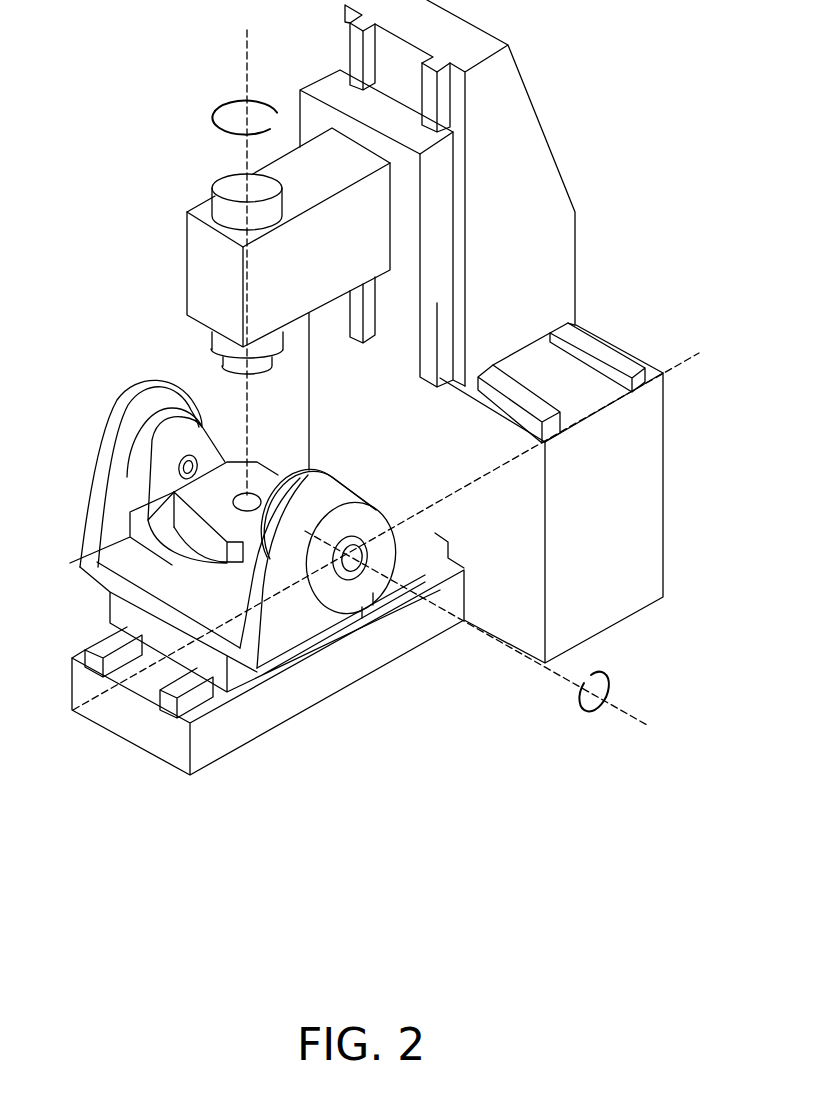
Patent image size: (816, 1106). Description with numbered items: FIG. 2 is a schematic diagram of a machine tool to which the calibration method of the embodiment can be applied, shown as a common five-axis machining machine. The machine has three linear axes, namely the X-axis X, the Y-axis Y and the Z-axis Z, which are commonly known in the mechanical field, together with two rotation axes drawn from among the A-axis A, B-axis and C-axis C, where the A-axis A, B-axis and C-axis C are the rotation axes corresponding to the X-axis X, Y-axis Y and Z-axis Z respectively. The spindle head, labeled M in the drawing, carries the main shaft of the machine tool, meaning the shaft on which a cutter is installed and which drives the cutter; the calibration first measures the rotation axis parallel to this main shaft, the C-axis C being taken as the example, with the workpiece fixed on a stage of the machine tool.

The spindle (main shaft) M is at (222, 357).
The Z-axis Z is at (240, 46).
The C-axis C is at (269, 140).
The Y-axis Y is at (684, 356).
The X-axis X is at (638, 713).
The A-axis A is at (592, 669).